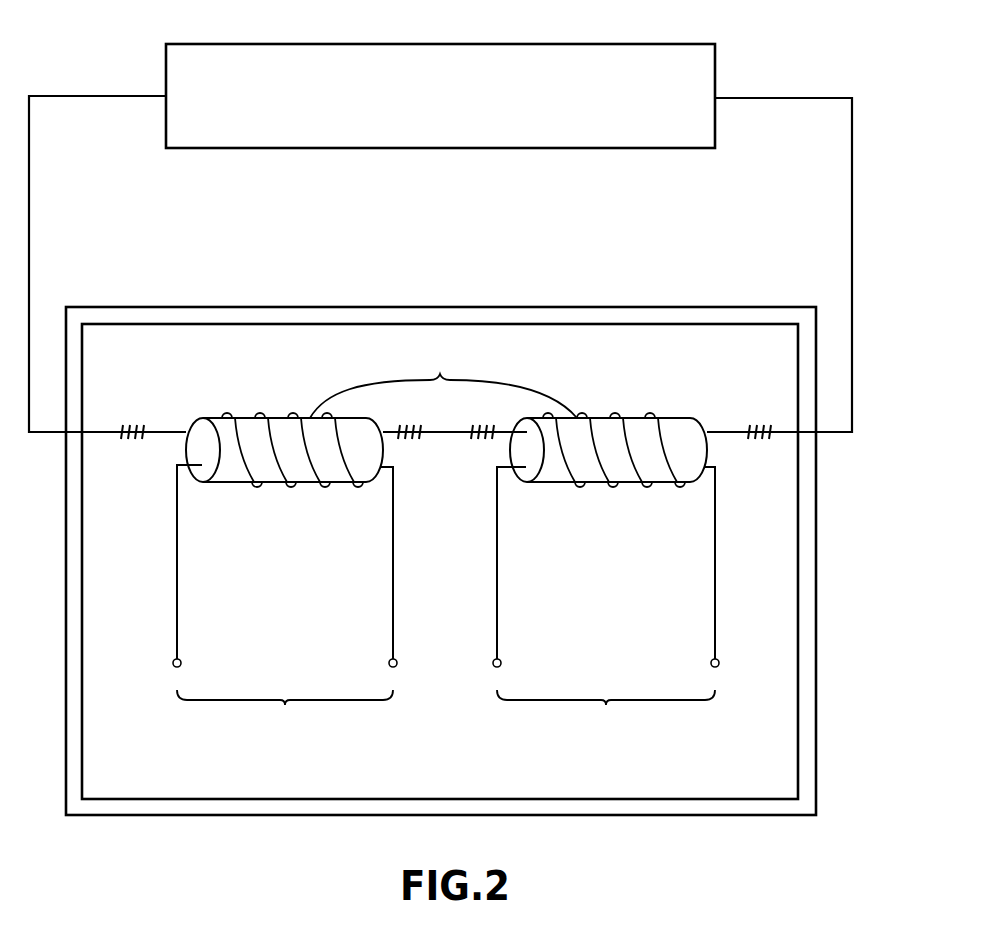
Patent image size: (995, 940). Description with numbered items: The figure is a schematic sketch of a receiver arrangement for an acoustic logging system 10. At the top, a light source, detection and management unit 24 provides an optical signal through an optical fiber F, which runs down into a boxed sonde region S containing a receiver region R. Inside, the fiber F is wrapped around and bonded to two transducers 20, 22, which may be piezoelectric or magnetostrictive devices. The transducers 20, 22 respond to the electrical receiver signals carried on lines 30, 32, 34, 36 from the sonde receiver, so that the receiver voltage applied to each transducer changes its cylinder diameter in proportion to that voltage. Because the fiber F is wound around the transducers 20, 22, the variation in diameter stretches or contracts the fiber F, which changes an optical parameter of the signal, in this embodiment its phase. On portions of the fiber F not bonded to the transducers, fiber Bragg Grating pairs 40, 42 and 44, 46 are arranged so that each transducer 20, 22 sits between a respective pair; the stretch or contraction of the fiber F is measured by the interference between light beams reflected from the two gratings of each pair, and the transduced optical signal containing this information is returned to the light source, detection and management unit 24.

The acoustic logging system 10 is at (116, 50).
The light source, detection and management unit 24 is at (665, 150).
The optical fiber F is at (29, 240).
The sonde S is at (718, 815).
The receiver housing R is at (673, 799).
The transducer 20 is at (248, 418).
The transducer 22 is at (665, 418).
The fiber Bragg Grating 40 is at (124, 437).
The fiber Bragg Grating 42 is at (421, 437).
The fiber Bragg Grating 44 is at (479, 437).
The fiber Bragg Grating 46 is at (750, 437).
The line 30 is at (177, 562).
The line 32 is at (393, 548).
The line 34 is at (497, 604).
The line 36 is at (715, 548).